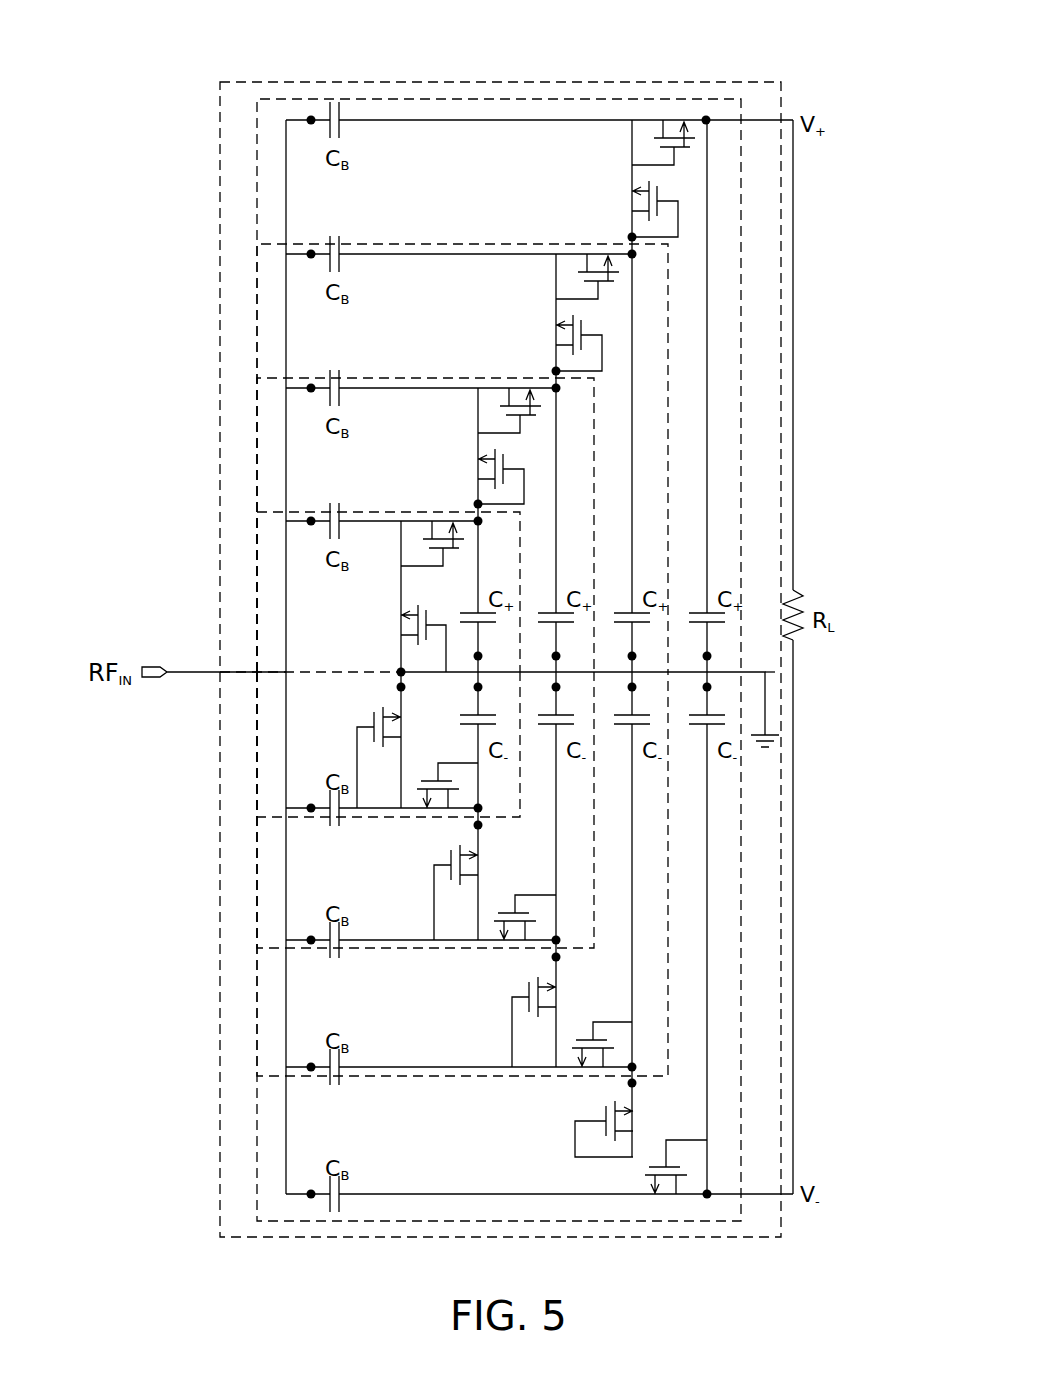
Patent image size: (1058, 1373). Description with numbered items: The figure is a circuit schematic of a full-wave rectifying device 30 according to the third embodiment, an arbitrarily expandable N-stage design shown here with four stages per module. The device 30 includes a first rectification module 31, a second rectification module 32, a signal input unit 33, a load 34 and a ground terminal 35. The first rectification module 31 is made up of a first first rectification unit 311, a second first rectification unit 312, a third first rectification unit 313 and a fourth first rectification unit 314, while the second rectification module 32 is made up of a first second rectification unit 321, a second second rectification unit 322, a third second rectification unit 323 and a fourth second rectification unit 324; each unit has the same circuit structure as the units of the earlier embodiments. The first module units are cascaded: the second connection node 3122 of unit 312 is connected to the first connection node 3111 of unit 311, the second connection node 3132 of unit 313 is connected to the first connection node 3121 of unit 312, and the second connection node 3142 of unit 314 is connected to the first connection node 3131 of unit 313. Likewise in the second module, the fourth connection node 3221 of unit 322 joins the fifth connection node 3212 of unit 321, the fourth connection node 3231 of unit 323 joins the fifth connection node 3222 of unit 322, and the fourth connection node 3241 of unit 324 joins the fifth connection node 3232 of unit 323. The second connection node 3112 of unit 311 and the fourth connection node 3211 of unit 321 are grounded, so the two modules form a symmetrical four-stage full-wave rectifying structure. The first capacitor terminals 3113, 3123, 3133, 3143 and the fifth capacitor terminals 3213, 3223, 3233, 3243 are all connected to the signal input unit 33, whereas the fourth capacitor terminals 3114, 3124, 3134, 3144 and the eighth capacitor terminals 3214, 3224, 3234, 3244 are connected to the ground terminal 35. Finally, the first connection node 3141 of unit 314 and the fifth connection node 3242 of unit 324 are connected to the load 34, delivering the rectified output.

The full-wave rectifying device 30 is at (152, 205).
The first rectification module 31 is at (220, 396).
The second rectification module 32 is at (220, 845).
The signal input unit 33 is at (83, 662).
The load 34 is at (806, 634).
The ground terminal 35 is at (768, 742).
The first first rectification unit 311 is at (257, 572).
The second first rectification unit 312 is at (257, 445).
The third first rectification unit 313 is at (257, 312).
The fourth first rectification unit 314 is at (257, 113).
The first second rectification unit 321 is at (257, 740).
The second second rectification unit 322 is at (257, 920).
The third second rectification unit 323 is at (257, 1030).
The fourth second rectification unit 324 is at (257, 1148).
The first connection node 3111 is at (478, 521).
The second connection node 3112 is at (401, 672).
The first capacitor terminal 3113 is at (311, 521).
The fourth capacitor terminal 3114 is at (478, 656).
The first connection node 3121 is at (556, 388).
The second connection node 3122 is at (478, 504).
The first capacitor terminal 3123 is at (311, 388).
The fourth capacitor terminal 3124 is at (556, 656).
The first connection node 3131 is at (632, 254).
The second connection node 3132 is at (556, 371).
The first capacitor terminal 3133 is at (311, 254).
The fourth capacitor terminal 3134 is at (632, 656).
The first connection node 3141 is at (706, 120).
The second connection node 3142 is at (632, 237).
The first capacitor terminal 3143 is at (311, 120).
The fourth capacitor terminal 3144 is at (707, 656).
The fourth connection node 3211 is at (401, 687).
The fifth connection node 3212 is at (478, 808).
The fifth capacitor terminal 3213 is at (311, 808).
The eighth capacitor terminal 3214 is at (478, 687).
The fourth connection node 3221 is at (478, 825).
The fifth connection node 3222 is at (556, 940).
The fifth capacitor terminal 3223 is at (311, 940).
The eighth capacitor terminal 3224 is at (556, 687).
The fourth connection node 3231 is at (556, 957).
The fifth connection node 3232 is at (632, 1067).
The fifth capacitor terminal 3233 is at (311, 1067).
The eighth capacitor terminal 3234 is at (632, 687).
The fourth connection node 3241 is at (632, 1083).
The fifth connection node 3242 is at (707, 1194).
The fifth capacitor terminal 3243 is at (311, 1194).
The eighth capacitor terminal 3244 is at (707, 687).